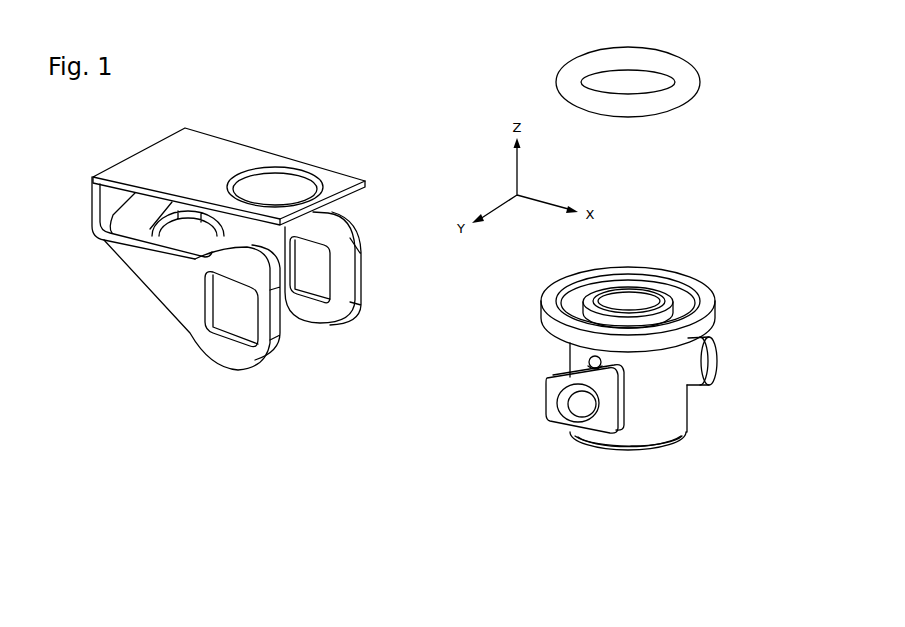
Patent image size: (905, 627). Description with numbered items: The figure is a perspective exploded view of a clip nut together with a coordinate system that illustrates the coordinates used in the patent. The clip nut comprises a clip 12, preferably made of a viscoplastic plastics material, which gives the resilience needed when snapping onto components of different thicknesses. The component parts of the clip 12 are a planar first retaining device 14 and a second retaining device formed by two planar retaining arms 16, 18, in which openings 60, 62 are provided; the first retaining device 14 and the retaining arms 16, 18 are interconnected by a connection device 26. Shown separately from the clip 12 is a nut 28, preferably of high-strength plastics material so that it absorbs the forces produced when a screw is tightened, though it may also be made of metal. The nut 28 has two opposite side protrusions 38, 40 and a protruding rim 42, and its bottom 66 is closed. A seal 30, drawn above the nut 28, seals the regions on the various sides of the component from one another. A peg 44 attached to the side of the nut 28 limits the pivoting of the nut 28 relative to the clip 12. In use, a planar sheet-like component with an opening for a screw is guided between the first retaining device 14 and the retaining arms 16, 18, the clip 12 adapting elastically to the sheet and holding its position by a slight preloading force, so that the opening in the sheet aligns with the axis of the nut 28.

The clip 12 is at (103, 309).
The first retaining device 14 is at (263, 150).
The retaining arm 16 is at (187, 332).
The retaining arm 18 is at (350, 227).
The connection device 26 is at (92, 203).
The nut 28 is at (505, 439).
The seal 30 is at (680, 108).
The side protrusion 38 is at (543, 393).
The side protrusion 40 is at (717, 355).
The protruding rim 42 is at (710, 290).
The peg 44 is at (589, 360).
The opening 60 is at (235, 322).
The opening 62 is at (313, 275).
The bottom 66 is at (634, 458).